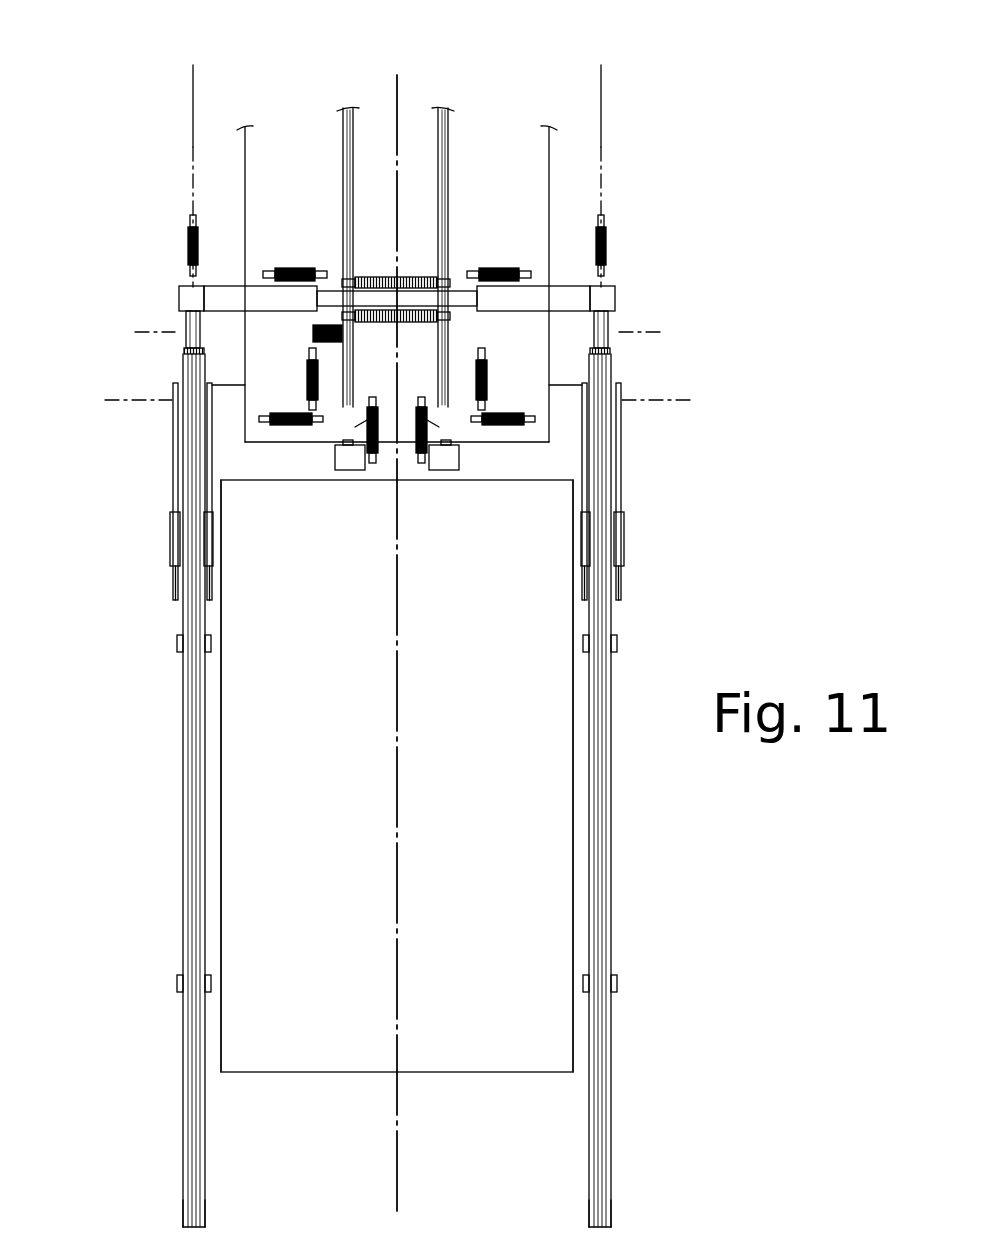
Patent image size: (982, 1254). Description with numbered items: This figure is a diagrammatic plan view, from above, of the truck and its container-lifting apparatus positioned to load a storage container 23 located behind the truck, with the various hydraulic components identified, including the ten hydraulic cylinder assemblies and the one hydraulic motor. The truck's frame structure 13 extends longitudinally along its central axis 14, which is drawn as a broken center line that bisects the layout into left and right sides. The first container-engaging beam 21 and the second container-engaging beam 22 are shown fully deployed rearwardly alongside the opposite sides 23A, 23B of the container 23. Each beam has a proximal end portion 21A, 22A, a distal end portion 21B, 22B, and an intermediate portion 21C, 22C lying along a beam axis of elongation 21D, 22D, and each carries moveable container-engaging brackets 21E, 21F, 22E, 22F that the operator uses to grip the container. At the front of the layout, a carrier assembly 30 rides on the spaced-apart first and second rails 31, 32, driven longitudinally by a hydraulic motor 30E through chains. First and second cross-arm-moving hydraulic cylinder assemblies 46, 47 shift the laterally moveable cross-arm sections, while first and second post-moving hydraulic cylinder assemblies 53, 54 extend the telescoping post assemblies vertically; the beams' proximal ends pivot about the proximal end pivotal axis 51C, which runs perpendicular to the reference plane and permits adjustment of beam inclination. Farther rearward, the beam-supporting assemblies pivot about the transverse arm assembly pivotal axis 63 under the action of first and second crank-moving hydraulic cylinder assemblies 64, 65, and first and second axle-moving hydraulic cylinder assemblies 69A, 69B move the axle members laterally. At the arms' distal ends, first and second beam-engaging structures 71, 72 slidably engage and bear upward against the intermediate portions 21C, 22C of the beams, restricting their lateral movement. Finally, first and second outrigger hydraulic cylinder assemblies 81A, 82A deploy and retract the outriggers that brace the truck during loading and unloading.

The frame structure 13 is at (245, 142).
The central axis 14 is at (397, 1198).
The first container-engaging beam 21 is at (188, 781).
The first proximal end portion 21A is at (188, 365).
The first distal end portion 21B is at (190, 1218).
The first intermediate portion 21C is at (188, 568).
The first beam axis of elongation 21D is at (193, 80).
The container-engaging bracket 21E is at (177, 646).
The container-engaging bracket 21F is at (177, 985).
The second container-engaging beam 22 is at (606, 781).
The second proximal end portion 22A is at (606, 365).
The second distal end portion 22B is at (604, 1218).
The second intermediate portion 22C is at (606, 568).
The second beam axis of elongation 22D is at (601, 80).
The container-engaging bracket 22E is at (617, 646).
The container-engaging bracket 22F is at (617, 985).
The storage container 23 is at (362, 1050).
The side of storage container 23A is at (221, 888).
The side of storage container 23B is at (573, 888).
The carrier assembly 30 is at (418, 275).
The hydraulic motor 30E is at (318, 327).
The first rail 31 is at (353, 122).
The second rail 32 is at (448, 126).
The first cross-arm-moving hydraulic cylinder assembly 46 is at (295, 268).
The second cross-arm-moving hydraulic cylinder assembly 47 is at (499, 268).
The proximal end pivotal axis 51C is at (136, 331).
The first post-moving hydraulic cylinder assembly 53 is at (187, 245).
The second post-moving hydraulic cylinder assembly 54 is at (606, 245).
The arm assembly pivotal axis 63 is at (106, 400).
The first crank-moving hydraulic cylinder assembly 64 is at (306, 390).
The second crank-moving hydraulic cylinder assembly 65 is at (488, 390).
The first axle-moving hydraulic cylinder assembly 69A is at (288, 425).
The second axle-moving hydraulic cylinder assembly 69B is at (506, 425).
The first beam-engaging structure 71 is at (166, 529).
The second beam-engaging structure 72 is at (628, 529).
The first outrigger hydraulic cylinder assembly 81A is at (355, 427).
The second outrigger hydraulic cylinder assembly 82A is at (439, 427).